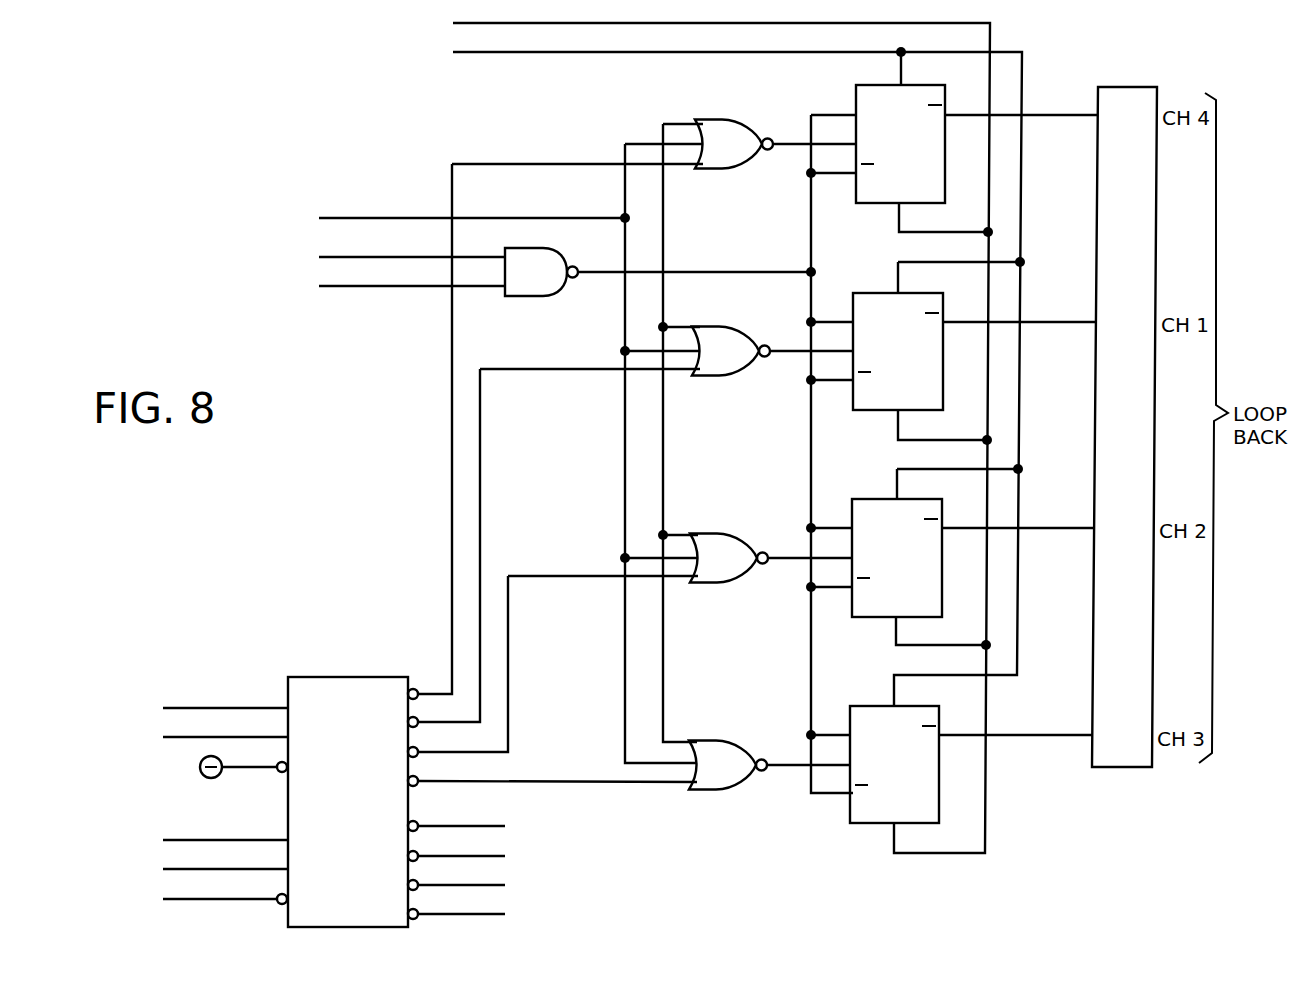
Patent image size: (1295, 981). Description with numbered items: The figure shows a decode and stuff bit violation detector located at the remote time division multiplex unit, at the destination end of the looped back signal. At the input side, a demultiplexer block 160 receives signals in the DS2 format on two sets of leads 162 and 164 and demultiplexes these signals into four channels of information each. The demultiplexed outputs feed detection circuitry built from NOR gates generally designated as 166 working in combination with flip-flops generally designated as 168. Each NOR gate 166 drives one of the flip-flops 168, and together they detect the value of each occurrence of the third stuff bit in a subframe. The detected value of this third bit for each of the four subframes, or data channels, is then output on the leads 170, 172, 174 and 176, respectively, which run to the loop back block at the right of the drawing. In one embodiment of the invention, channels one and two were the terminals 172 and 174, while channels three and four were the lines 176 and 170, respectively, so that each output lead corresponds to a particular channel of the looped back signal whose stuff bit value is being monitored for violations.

The demultiplexer block 160 is at (346, 677).
The set of leads 162 is at (215, 692).
The set of leads 164 is at (209, 829).
The NOR gates 166 is at (686, 106).
The flip-flops 168 is at (822, 90).
The lead 170 is at (1055, 115).
The lead 172 is at (1055, 322).
The lead 174 is at (1055, 528).
The lead 176 is at (1050, 735).